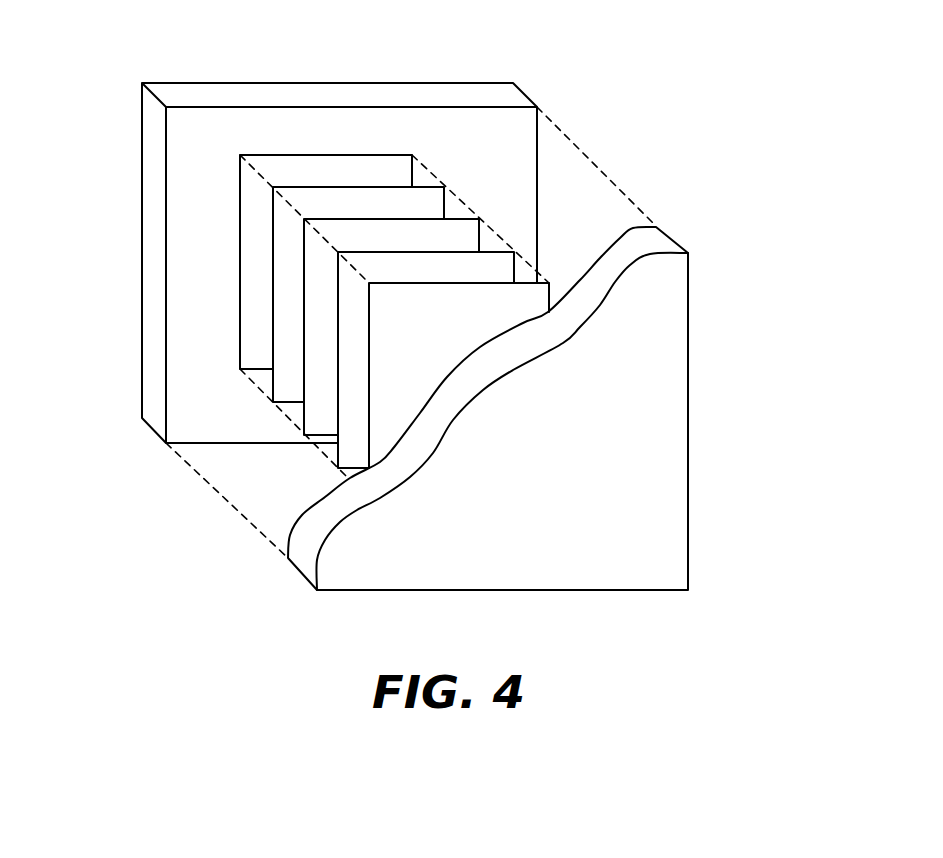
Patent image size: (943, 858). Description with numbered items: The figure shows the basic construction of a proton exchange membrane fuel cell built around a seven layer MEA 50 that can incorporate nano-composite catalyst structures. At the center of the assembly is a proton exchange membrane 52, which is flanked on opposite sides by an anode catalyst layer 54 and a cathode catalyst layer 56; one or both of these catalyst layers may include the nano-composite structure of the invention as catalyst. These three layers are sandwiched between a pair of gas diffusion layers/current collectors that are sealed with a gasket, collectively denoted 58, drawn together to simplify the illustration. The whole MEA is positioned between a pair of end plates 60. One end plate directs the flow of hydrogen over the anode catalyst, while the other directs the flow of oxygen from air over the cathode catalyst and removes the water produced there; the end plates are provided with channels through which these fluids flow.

The seven layer MEA 50 is at (440, 303).
The proton exchange membrane 52 is at (310, 303).
The anode catalyst layer 54 is at (345, 367).
The cathode catalyst layer 56 is at (275, 235).
The gas diffusion layers/current collectors sealed with a gasket 58 is at (243, 165).
The end plates 60 is at (508, 97).